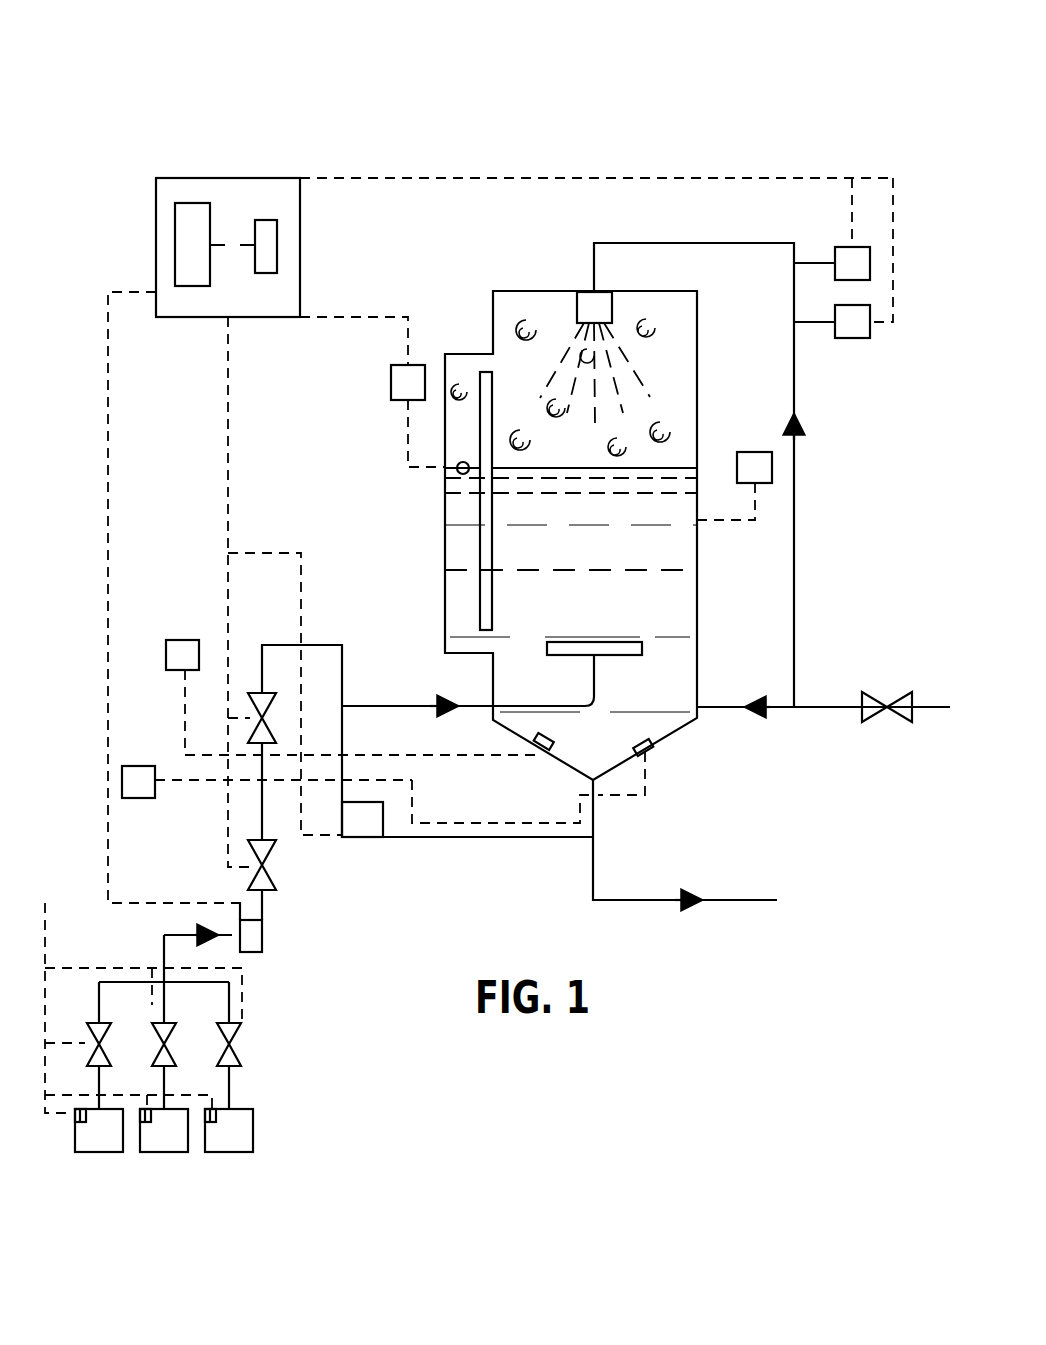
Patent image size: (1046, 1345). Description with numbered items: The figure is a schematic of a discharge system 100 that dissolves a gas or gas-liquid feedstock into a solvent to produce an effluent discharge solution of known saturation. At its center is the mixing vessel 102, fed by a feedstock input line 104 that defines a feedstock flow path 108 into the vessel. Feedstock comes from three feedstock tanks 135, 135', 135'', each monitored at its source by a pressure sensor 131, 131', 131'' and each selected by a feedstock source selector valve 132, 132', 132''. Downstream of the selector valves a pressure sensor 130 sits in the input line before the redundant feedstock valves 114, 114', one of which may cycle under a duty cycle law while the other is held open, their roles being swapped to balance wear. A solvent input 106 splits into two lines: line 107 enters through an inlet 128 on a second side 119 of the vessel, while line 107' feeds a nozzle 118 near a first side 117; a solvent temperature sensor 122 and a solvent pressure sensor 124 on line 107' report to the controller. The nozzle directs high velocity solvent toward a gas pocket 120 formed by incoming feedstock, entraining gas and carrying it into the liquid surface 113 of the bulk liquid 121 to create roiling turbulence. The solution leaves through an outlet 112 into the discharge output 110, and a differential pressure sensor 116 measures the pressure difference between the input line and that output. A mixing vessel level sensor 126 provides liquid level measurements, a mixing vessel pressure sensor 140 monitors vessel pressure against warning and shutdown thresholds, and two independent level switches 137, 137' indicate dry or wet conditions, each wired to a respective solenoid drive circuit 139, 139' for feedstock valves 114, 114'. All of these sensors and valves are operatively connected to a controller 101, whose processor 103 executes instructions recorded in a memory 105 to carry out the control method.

The discharge system 100 is at (820, 118).
The controller 101 is at (240, 175).
The mixing vessel 102 is at (486, 288).
The processor 103 is at (195, 203).
The feedstock input line 104 is at (260, 638).
The memory 105 is at (267, 220).
The solvent input 106 is at (835, 700).
The line 107 is at (823, 754).
The line 107' is at (753, 475).
The feedstock flow path 108 is at (402, 702).
The discharge output 110 is at (642, 895).
The outlet 112 is at (590, 778).
The liquid surface 113 is at (663, 468).
The feedstock valve 114 is at (194, 718).
The feedstock valve 114' is at (199, 865).
The differential pressure sensor 116 is at (362, 838).
The first side 117 is at (527, 291).
The nozzle 118 is at (597, 312).
The second side 119 is at (697, 722).
The gas pocket 120 is at (515, 413).
The bulk liquid 121 is at (503, 525).
The solvent temperature sensor 122 is at (855, 265).
The solvent pressure sensor 124 is at (855, 322).
The mixing vessel level sensor 126 is at (391, 385).
The inlet 128 is at (698, 703).
The pressure sensor 130 is at (262, 950).
The pressure sensor 131 is at (232, 1163).
The pressure sensor 131' is at (152, 1163).
The pressure sensor 131'' is at (71, 1163).
The feedstock source selector valve 132 is at (278, 1061).
The feedstock source selector valve 132' is at (233, 1041).
The feedstock source selector valve 132'' is at (143, 1008).
The feedstock tank 135 is at (285, 1151).
The feedstock tank 135' is at (183, 1181).
The feedstock tank 135'' is at (112, 1183).
The level switch 137 is at (538, 794).
The level switch 137' is at (369, 738).
The solenoid drive circuit 139 is at (158, 669).
The solenoid drive circuit 139' is at (232, 801).
The mixing vessel pressure sensor 140 is at (755, 467).